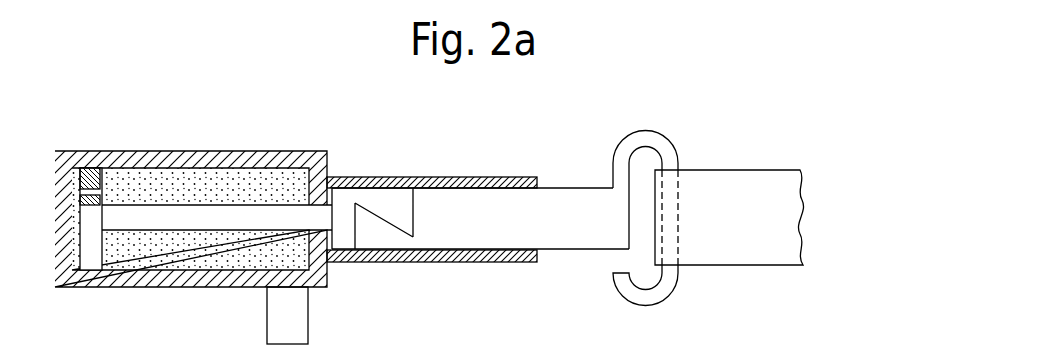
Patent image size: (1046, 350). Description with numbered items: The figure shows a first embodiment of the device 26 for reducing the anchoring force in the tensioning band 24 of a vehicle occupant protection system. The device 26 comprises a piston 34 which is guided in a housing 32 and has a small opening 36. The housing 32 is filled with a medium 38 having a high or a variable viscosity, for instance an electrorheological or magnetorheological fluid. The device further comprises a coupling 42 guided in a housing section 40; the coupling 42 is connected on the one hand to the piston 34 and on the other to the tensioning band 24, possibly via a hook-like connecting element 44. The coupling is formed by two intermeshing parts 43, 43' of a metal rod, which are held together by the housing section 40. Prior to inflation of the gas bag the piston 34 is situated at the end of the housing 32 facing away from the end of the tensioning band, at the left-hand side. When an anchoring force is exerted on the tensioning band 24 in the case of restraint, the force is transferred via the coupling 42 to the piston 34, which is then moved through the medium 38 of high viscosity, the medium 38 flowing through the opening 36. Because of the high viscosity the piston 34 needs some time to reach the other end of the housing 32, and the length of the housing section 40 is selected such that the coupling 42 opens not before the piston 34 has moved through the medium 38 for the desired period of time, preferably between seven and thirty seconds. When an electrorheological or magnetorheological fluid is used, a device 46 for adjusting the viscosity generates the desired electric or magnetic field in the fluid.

The tensioning band 24 is at (740, 195).
The device for reducing the anchoring force 26 is at (349, 156).
The housing 32 is at (227, 154).
The piston 34 is at (93, 261).
The small opening 36 is at (95, 180).
The medium 38 is at (192, 251).
The housing section 40 is at (489, 178).
The coupling 42 is at (420, 262).
The intermeshing part of a metal rod 43 is at (375, 191).
The intermeshing part of a metal rod 43' is at (480, 191).
The hook-like connecting element 44 is at (657, 142).
The device for adjusting the viscosity 46 is at (300, 316).